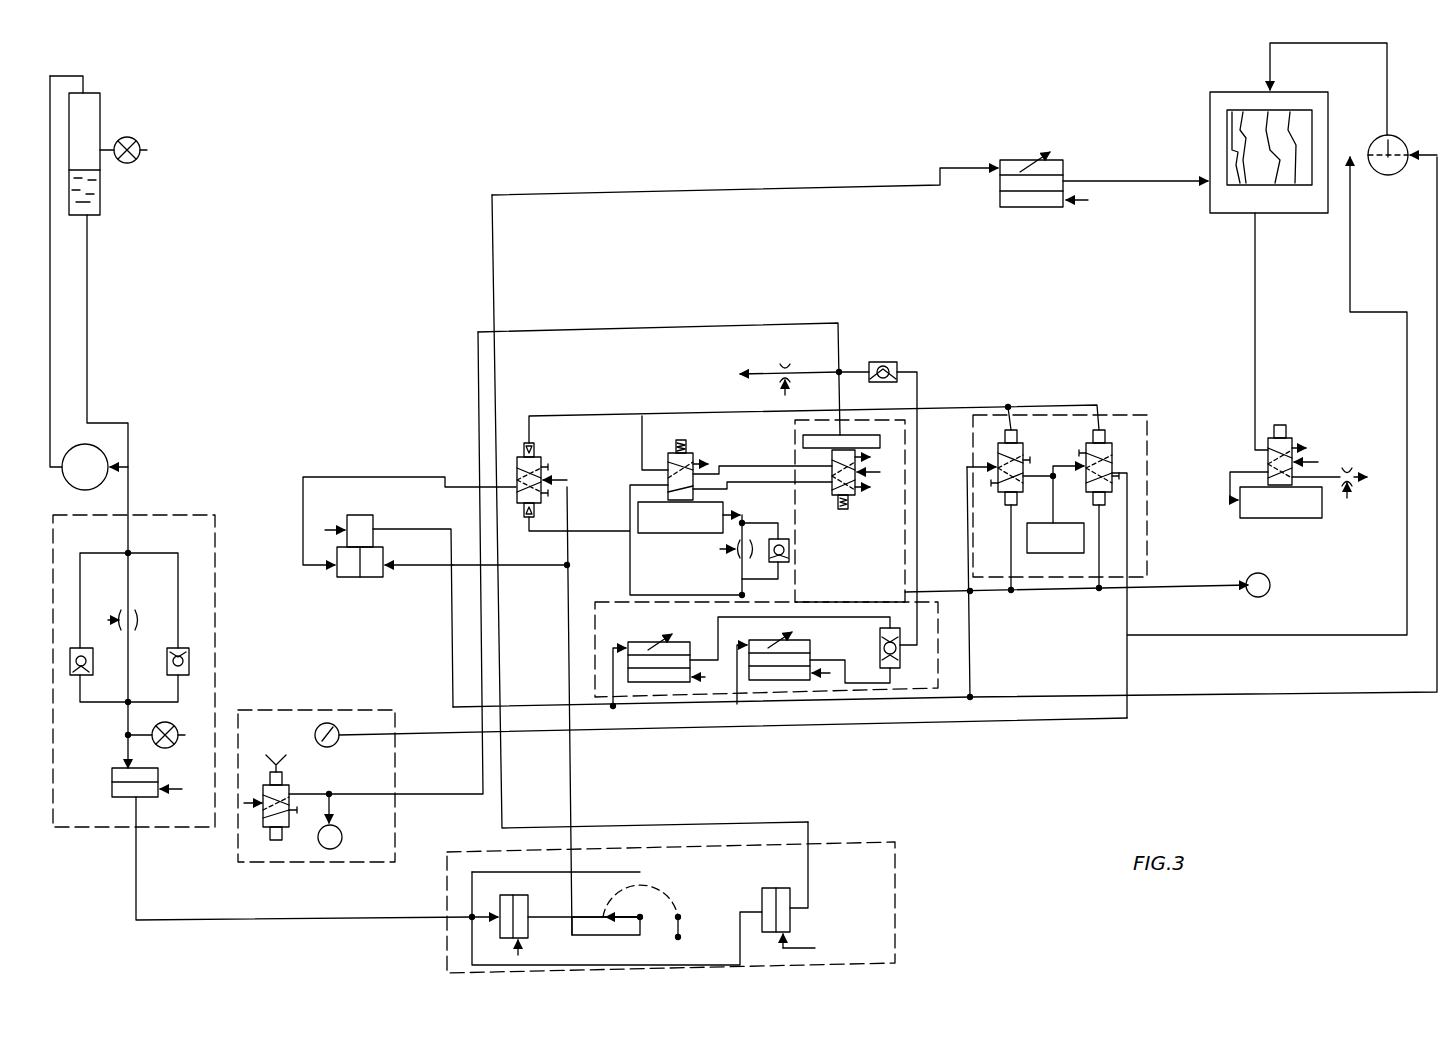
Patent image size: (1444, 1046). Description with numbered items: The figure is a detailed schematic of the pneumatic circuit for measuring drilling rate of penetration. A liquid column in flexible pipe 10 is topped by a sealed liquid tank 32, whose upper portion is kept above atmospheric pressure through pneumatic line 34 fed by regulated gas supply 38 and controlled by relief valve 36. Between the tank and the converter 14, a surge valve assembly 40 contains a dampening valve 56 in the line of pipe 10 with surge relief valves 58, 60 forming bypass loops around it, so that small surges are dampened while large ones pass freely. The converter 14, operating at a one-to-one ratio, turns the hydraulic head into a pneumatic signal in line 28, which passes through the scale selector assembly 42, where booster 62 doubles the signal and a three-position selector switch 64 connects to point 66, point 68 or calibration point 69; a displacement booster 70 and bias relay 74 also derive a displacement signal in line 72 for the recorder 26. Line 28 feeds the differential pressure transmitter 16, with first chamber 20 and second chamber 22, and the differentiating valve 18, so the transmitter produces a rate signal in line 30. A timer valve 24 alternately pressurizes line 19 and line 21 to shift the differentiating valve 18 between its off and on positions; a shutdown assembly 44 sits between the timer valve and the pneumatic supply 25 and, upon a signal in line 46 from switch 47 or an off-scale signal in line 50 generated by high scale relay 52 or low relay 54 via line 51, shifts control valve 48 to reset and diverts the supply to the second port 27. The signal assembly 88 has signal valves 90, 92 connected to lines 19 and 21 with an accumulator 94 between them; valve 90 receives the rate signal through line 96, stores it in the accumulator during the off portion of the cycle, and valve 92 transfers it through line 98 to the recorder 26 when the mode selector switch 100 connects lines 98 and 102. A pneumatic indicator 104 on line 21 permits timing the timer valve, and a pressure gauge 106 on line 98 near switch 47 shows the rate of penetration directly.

The flexible pipe 10 is at (88, 262).
The converter 14 is at (112, 795).
The differential pressure transmitter 16 is at (358, 578).
The differentiating valve 18 is at (541, 455).
The line 19 is at (573, 408).
The first chamber 20 is at (378, 572).
The line 21 is at (592, 528).
The second chamber 22 is at (340, 572).
The timer valve 24 is at (693, 450).
The pneumatic supply 25 is at (830, 498).
The recorder 26 is at (1295, 215).
The second port 27 is at (700, 488).
The line 28 is at (235, 912).
The line 30 is at (452, 655).
The liquid tank 32 is at (100, 105).
The pneumatic line 34 is at (52, 312).
The relief valve 36 is at (138, 158).
The regulated gas supply 38 is at (74, 445).
The surge valve assembly 40 is at (165, 510).
The scale selector assembly 42 is at (447, 935).
The shutdown assembly 44 is at (612, 602).
The line 46 is at (582, 325).
The switch 47 is at (289, 825).
The control valve 48 is at (802, 438).
The line 50 is at (905, 485).
The line 51 is at (845, 602).
The high scale relay 52 is at (688, 642).
The low relay 54 is at (810, 645).
The dampening valve 56 is at (134, 612).
The surge relief valve 58 is at (93, 662).
The surge relief valve 60 is at (184, 648).
The booster 62 is at (528, 905).
The selector switch 64 is at (640, 920).
The point 66 is at (600, 912).
The point 68 is at (640, 872).
The point 69 is at (680, 917).
The displacement booster 70 is at (790, 925).
The line 72 is at (724, 820).
The bias relay 74 is at (1025, 208).
The signal assembly 88 is at (1058, 594).
The signal valve 90 is at (1023, 445).
The signal valve 92 is at (1112, 440).
The accumulator 94 is at (1068, 520).
The line 96 is at (970, 657).
The line 98 is at (1147, 500).
The mode selector switch 100 is at (1370, 138).
The line 102 is at (1388, 65).
The pneumatic indicator 104 is at (1260, 573).
The pressure gauge 106 is at (328, 722).